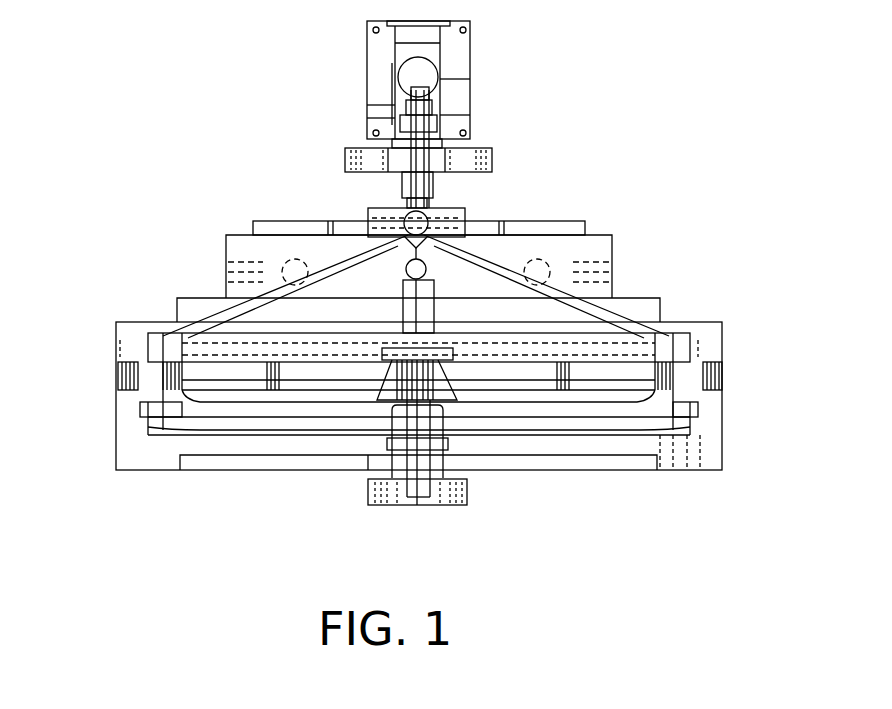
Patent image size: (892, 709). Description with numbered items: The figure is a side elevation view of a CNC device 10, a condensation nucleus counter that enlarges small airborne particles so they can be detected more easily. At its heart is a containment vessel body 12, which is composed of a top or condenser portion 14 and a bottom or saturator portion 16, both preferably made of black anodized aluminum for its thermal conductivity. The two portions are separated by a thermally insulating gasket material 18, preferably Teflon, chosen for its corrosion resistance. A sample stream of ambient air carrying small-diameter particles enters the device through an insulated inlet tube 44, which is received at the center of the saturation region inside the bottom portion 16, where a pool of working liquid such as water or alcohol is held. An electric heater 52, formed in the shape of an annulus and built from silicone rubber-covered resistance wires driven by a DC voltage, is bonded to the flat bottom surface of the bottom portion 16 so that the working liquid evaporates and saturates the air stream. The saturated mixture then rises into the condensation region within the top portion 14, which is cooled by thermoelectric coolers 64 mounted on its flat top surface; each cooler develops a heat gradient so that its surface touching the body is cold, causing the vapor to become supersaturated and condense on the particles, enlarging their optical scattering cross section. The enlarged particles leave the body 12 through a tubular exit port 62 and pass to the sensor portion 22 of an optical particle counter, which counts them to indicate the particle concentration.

The CNC device 10 is at (643, 70).
The containment vessel body 12 is at (640, 278).
The top or condenser portion 14 is at (127, 340).
The bottom or saturator portion 16 is at (140, 447).
The thermally insulating gasket material 18 is at (117, 373).
The sensor portion 22 is at (458, 58).
The insulated inlet tube 44 is at (390, 493).
The electric heater 52 is at (567, 462).
The tubular exit port 62 is at (432, 203).
The thermoelectric coolers 64 is at (273, 228).